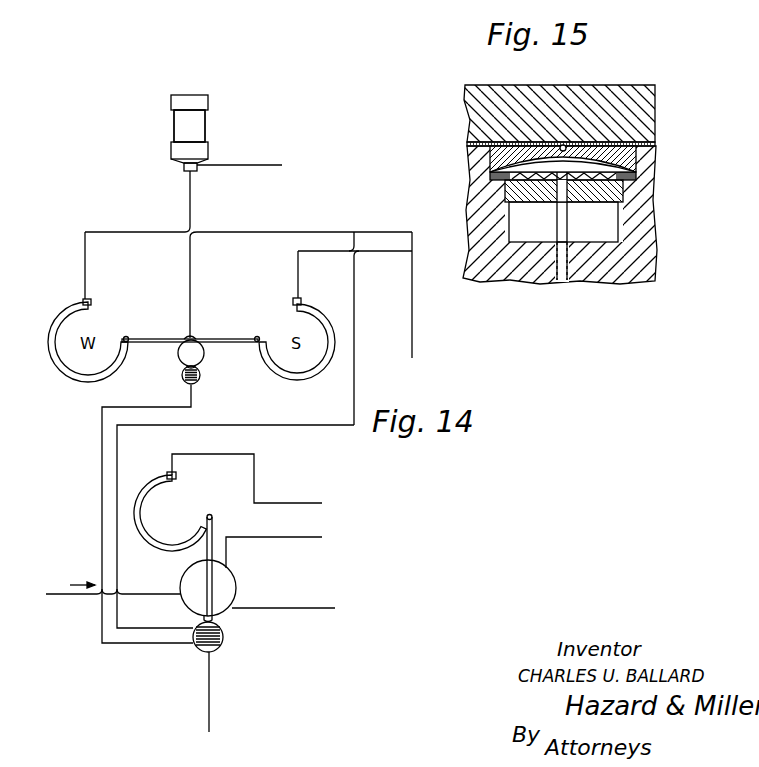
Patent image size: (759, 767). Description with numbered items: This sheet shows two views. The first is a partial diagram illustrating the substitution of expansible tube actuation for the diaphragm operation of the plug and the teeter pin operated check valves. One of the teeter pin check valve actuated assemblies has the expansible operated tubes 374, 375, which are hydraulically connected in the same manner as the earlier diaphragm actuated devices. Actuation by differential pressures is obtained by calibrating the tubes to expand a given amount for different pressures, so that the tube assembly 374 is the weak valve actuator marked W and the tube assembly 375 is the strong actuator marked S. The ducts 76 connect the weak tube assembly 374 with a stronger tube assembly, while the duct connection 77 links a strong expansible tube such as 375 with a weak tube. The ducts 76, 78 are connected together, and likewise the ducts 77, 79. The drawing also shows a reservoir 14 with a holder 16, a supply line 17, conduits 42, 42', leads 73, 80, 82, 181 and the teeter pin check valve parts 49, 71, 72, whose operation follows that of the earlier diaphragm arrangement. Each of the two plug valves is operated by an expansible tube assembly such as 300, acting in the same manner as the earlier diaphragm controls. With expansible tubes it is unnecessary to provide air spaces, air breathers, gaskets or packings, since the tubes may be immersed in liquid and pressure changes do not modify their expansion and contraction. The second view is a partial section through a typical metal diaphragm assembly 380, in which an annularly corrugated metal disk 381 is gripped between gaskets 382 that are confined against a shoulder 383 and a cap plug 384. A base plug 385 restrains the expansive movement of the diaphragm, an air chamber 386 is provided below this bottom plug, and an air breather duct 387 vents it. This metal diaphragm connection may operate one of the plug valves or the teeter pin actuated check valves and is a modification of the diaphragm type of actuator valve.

In FIG. 14, the reservoir bottle 14 is at (192, 120).
In FIG. 14, the bottle holder 16 is at (168, 133).
In FIG. 14, the supply line 17 is at (63, 594).
In FIG. 14, the conduit 42 is at (274, 552).
In FIG. 14, the conduit branch 42' is at (244, 478).
In FIG. 14, the valve 49 is at (257, 624).
In FIG. 14, the valve ball 71 is at (182, 371).
In FIG. 14, the pivot bar 72 is at (240, 338).
In FIG. 14, the left lead 73 is at (80, 230).
In FIG. 14, the duct 76 is at (105, 232).
In FIG. 14, the duct connection 77 is at (315, 251).
In FIG. 14, the duct 78 is at (238, 425).
In FIG. 14, the duct 79 is at (412, 331).
In FIG. 14, the return conductor 80 is at (102, 427).
In FIG. 14, the feed conductor 82 is at (190, 202).
In FIG. 14, the branch line 181 is at (282, 150).
In FIG. 14, the expansible tube assembly 300 is at (132, 508).
In FIG. 14, the expansible operated tube 374 is at (66, 312).
In FIG. 14, the expansible operated tube 375 is at (345, 275).
In FIG. 15, the metal diaphragm assembly 380 is at (660, 146).
In FIG. 15, the annularly corrugated metal disk 381 is at (503, 195).
In FIG. 15, the gaskets 382 is at (632, 174).
In FIG. 15, the shoulder 383 is at (620, 180).
In FIG. 15, the cap plug 384 is at (483, 142).
In FIG. 15, the base plug 385 is at (602, 200).
In FIG. 15, the air chamber 386 is at (500, 281).
In FIG. 15, the air breather duct 387 is at (540, 202).